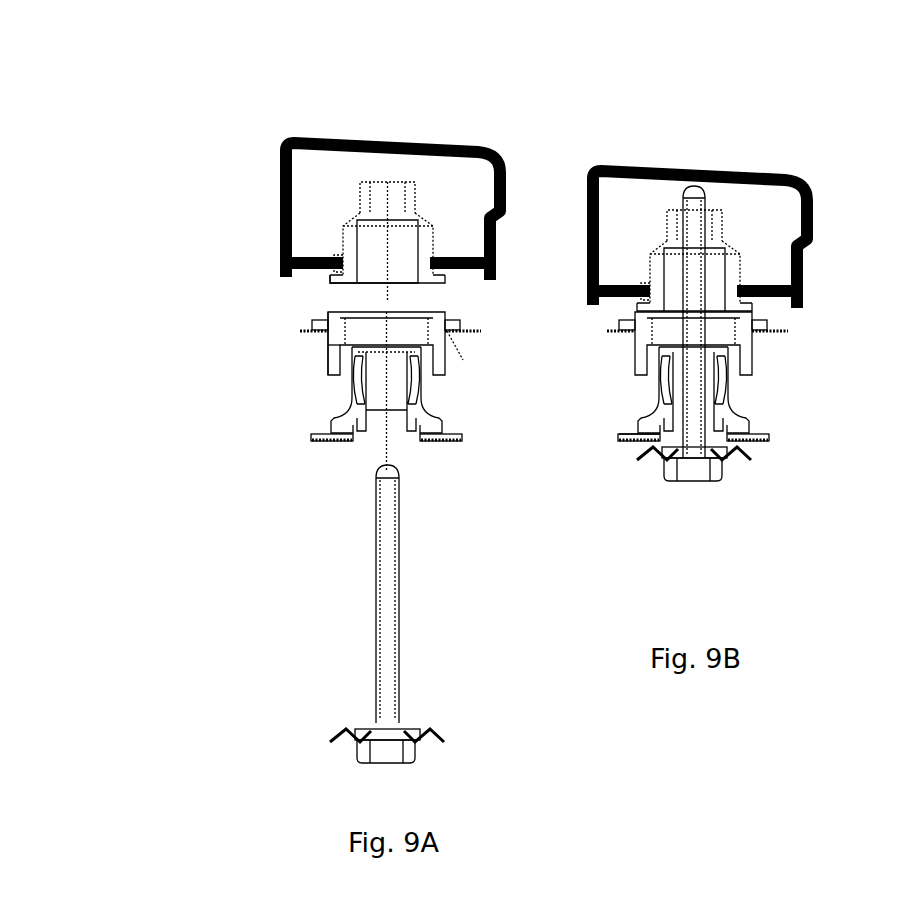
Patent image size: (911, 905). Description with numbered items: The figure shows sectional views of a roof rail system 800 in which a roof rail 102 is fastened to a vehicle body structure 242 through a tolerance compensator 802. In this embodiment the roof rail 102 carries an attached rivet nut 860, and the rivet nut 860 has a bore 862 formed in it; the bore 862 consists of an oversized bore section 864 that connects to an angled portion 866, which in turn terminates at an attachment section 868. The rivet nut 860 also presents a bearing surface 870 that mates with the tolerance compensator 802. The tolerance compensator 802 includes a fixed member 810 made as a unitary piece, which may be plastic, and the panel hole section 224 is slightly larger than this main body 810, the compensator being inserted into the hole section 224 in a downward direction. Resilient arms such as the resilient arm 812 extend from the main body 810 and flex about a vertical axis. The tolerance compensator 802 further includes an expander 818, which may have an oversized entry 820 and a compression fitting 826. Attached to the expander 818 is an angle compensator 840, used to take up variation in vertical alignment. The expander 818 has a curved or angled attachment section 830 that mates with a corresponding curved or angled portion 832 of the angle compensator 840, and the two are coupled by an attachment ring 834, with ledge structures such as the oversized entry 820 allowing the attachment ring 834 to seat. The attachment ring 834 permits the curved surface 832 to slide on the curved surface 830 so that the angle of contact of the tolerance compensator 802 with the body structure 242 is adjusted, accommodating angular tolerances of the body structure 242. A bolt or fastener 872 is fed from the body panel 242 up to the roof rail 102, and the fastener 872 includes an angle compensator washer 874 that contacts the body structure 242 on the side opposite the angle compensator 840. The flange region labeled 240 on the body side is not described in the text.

In FIG. 9A, the roof rail system 800 is at (266, 96).
In FIG. 9B, the roof rail system 800 is at (812, 157).
In FIG. 9A, the roof rail 102 is at (455, 148).
In FIG. 9B, the roof rail 102 is at (820, 243).
In FIG. 9A, the attachment section 868 is at (366, 197).
In FIG. 9A, the oversized bore section 864 is at (380, 283).
In FIG. 9A, the rivet nut 860 is at (345, 246).
In FIG. 9A, the angled portion 866 is at (352, 228).
In FIG. 9A, the bore 862 is at (410, 255).
In FIG. 9A, the bearing surface 870 is at (346, 283).
In FIG. 9A, the panel hole section 224 is at (478, 329).
In FIG. 9A, the fixed member 810 is at (327, 313).
In FIG. 9A, the resilient arm 812 is at (322, 337).
In FIG. 9A, the oversized entry 820 is at (456, 331).
In FIG. 9A, the tolerance compensator 802 is at (254, 392).
In FIG. 9B, the tolerance compensator 802 is at (778, 382).
In FIG. 9A, the expander 818 is at (340, 393).
In FIG. 9A, the compression fitting 826 is at (410, 384).
In FIG. 9A, the attachment section 830 is at (338, 430).
In FIG. 9A, the curved portion 832 is at (330, 435).
In FIG. 9A, the attachment ring 834 is at (372, 447).
In FIG. 9A, the angle compensator 840 is at (447, 432).
In FIG. 9B, the angle compensator 840 is at (752, 429).
In FIG. 9A, the fastener 872 is at (380, 630).
In FIG. 9B, the fastener 872 is at (695, 423).
In FIG. 9A, the angle compensator washer 874 is at (335, 735).
In FIG. 9B, the angle compensator washer 874 is at (645, 452).
In FIG. 9B, the flange 240 is at (600, 340).
In FIG. 9B, the body structure 242 is at (618, 440).